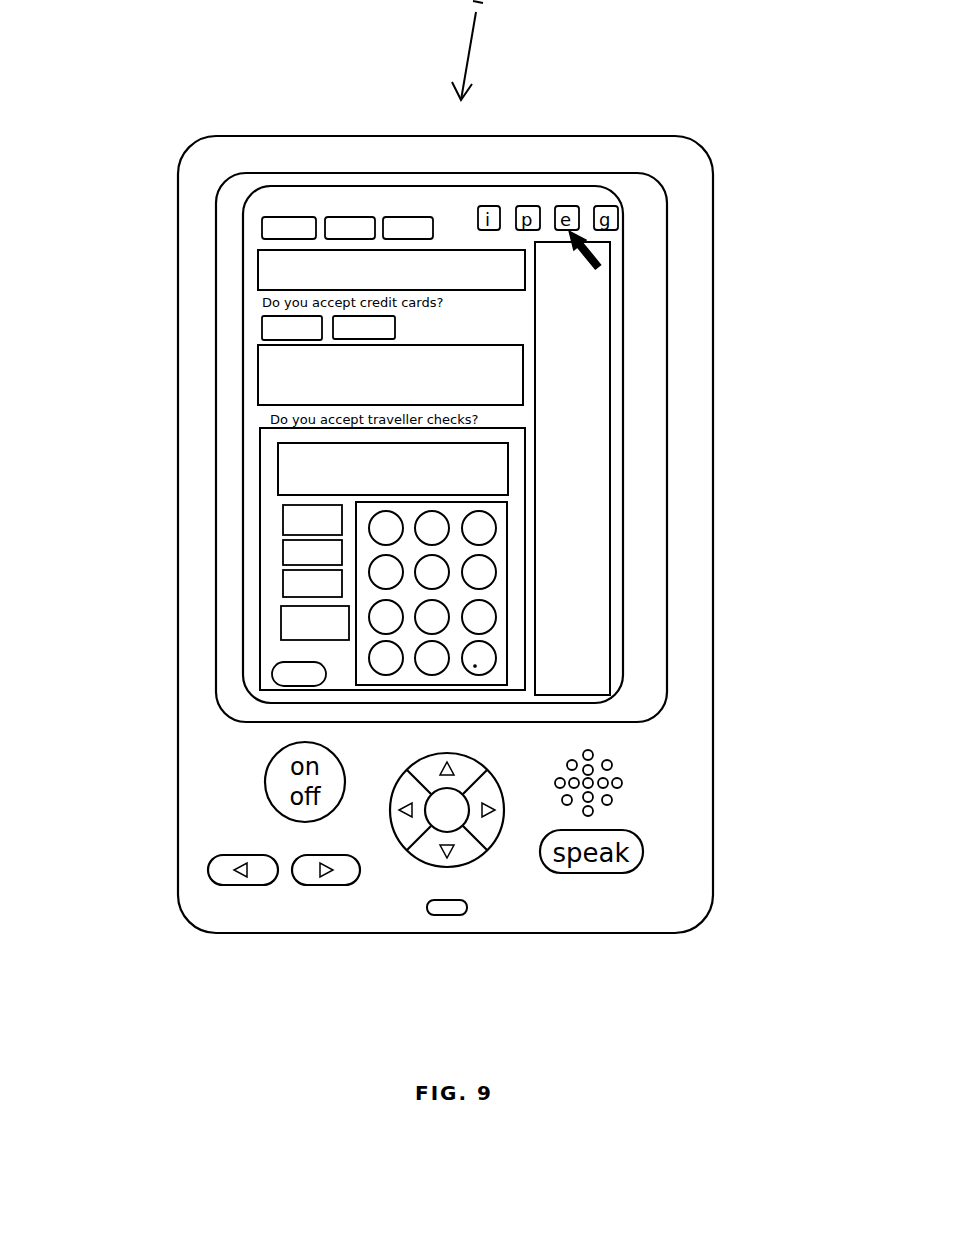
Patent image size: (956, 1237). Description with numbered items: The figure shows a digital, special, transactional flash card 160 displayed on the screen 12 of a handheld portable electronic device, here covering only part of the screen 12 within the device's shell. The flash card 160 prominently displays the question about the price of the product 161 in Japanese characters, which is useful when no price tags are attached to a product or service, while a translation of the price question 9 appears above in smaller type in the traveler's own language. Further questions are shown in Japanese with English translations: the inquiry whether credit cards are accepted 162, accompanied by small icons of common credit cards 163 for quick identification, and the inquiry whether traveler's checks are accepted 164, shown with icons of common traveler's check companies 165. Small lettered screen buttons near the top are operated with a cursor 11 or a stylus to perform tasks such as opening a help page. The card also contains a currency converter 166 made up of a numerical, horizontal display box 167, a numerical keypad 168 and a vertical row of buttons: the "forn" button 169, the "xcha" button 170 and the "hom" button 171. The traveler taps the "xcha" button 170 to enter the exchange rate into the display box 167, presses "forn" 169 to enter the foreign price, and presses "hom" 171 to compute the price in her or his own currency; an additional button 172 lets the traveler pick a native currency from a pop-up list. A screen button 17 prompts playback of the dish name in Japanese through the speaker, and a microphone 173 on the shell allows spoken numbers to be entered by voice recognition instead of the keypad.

The question repeated in English 9 is at (278, 204).
The cursor 11 is at (600, 262).
The screen 12 is at (650, 472).
The screen button 17 is at (272, 675).
The digital, special, transactional flash card 160 is at (623, 383).
The question about the price of the product 161 is at (597, 298).
The inquiry whether credit cards are accepted 162 is at (262, 287).
The small icons of common credit cards 163 is at (262, 228).
The inquiry whether traveler's checks are accepted 164 is at (270, 388).
The icon of common traveler's check companies 165 is at (262, 330).
The currency converter 166 is at (517, 585).
The numerical, horizontal display box 167 is at (290, 452).
The numerical keypad 168 is at (490, 675).
The "forn" button 169 is at (283, 517).
The "xcha" button 170 is at (283, 553).
The "hom" button 171 is at (283, 585).
The additional button 172 is at (283, 625).
The microphone 173 is at (430, 910).